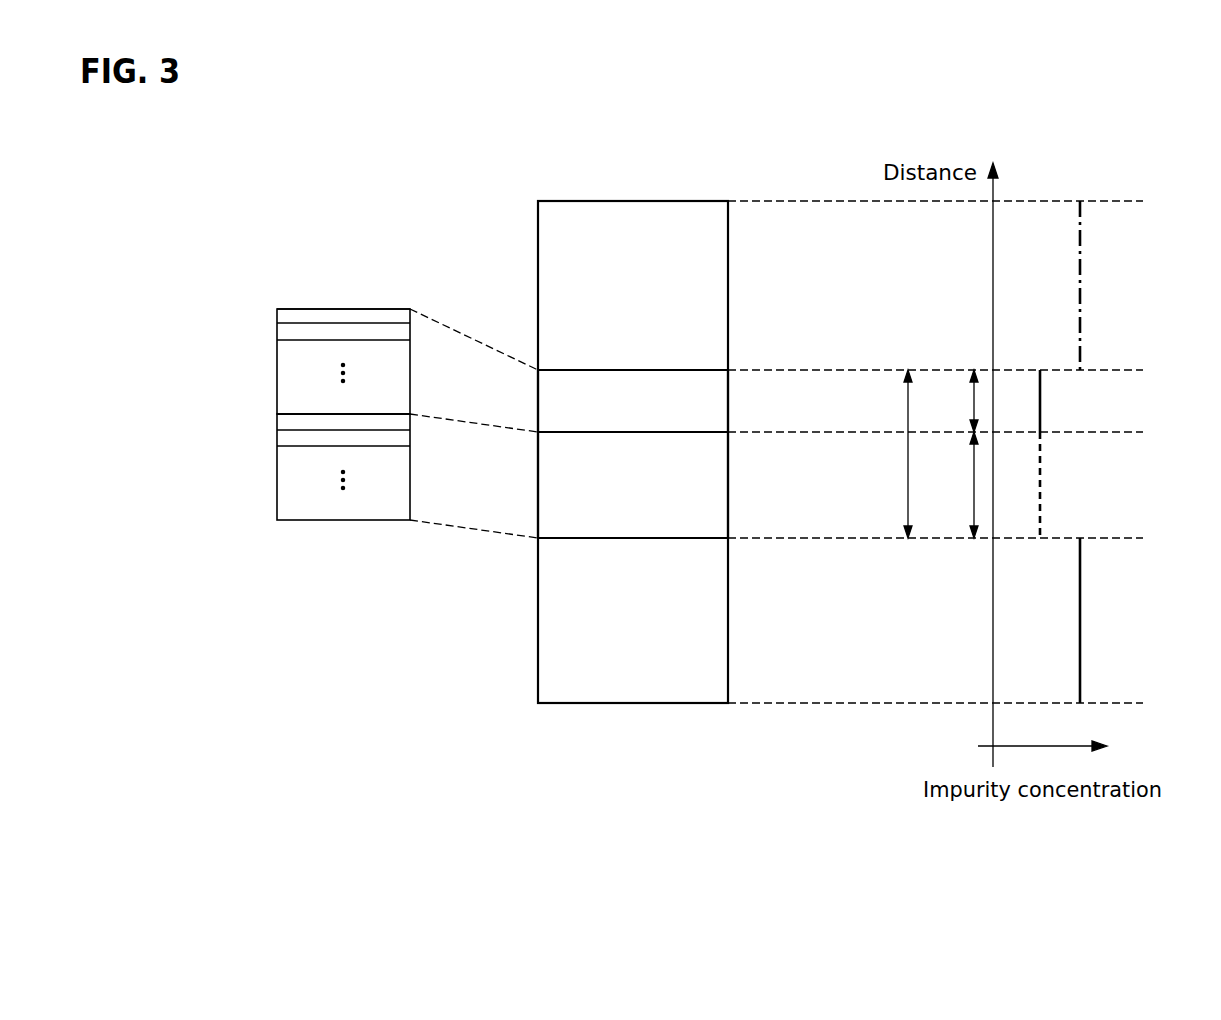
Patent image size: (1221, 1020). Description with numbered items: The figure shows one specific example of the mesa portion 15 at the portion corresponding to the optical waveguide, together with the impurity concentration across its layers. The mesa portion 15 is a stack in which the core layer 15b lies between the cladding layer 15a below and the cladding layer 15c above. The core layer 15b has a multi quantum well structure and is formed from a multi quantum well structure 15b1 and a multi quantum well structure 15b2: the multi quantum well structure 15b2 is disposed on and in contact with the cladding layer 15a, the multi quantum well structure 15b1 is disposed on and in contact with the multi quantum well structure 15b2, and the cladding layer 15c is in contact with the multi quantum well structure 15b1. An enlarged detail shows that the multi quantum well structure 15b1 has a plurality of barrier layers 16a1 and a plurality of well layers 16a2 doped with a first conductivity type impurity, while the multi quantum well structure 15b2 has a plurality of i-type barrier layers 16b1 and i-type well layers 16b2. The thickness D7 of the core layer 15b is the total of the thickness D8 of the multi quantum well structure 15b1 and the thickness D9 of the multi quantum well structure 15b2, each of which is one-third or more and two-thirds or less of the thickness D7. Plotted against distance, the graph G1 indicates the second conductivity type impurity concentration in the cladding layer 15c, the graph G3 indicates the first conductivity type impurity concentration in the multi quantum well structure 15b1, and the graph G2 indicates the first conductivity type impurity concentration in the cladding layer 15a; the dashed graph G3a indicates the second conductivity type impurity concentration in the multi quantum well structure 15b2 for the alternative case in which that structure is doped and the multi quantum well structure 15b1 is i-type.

The mesa portion 15 is at (604, 183).
The cladding layer 15a is at (548, 640).
The core layer 15b is at (810, 398).
The multi quantum well (MQW) structure 15b1 is at (712, 405).
The multi quantum well (MQW) structure 15b2 is at (712, 487).
The cladding layer 15c is at (548, 282).
The barrier layers 16a1 is at (280, 315).
The well layers 16a2 is at (280, 332).
The barrier layers 16b1 is at (280, 420).
The well layers 16b2 is at (280, 437).
The thickness of the core layer D7 is at (891, 454).
The thickness of the multi quantum well (MQW) structure 15b1 D8 is at (955, 401).
The thickness of the multi quantum well (MQW) structure 15b2 D9 is at (956, 485).
The graph G1 is at (1081, 276).
The graph G2 is at (1081, 624).
The graph G3 is at (1041, 398).
The graph G3a is at (1041, 480).